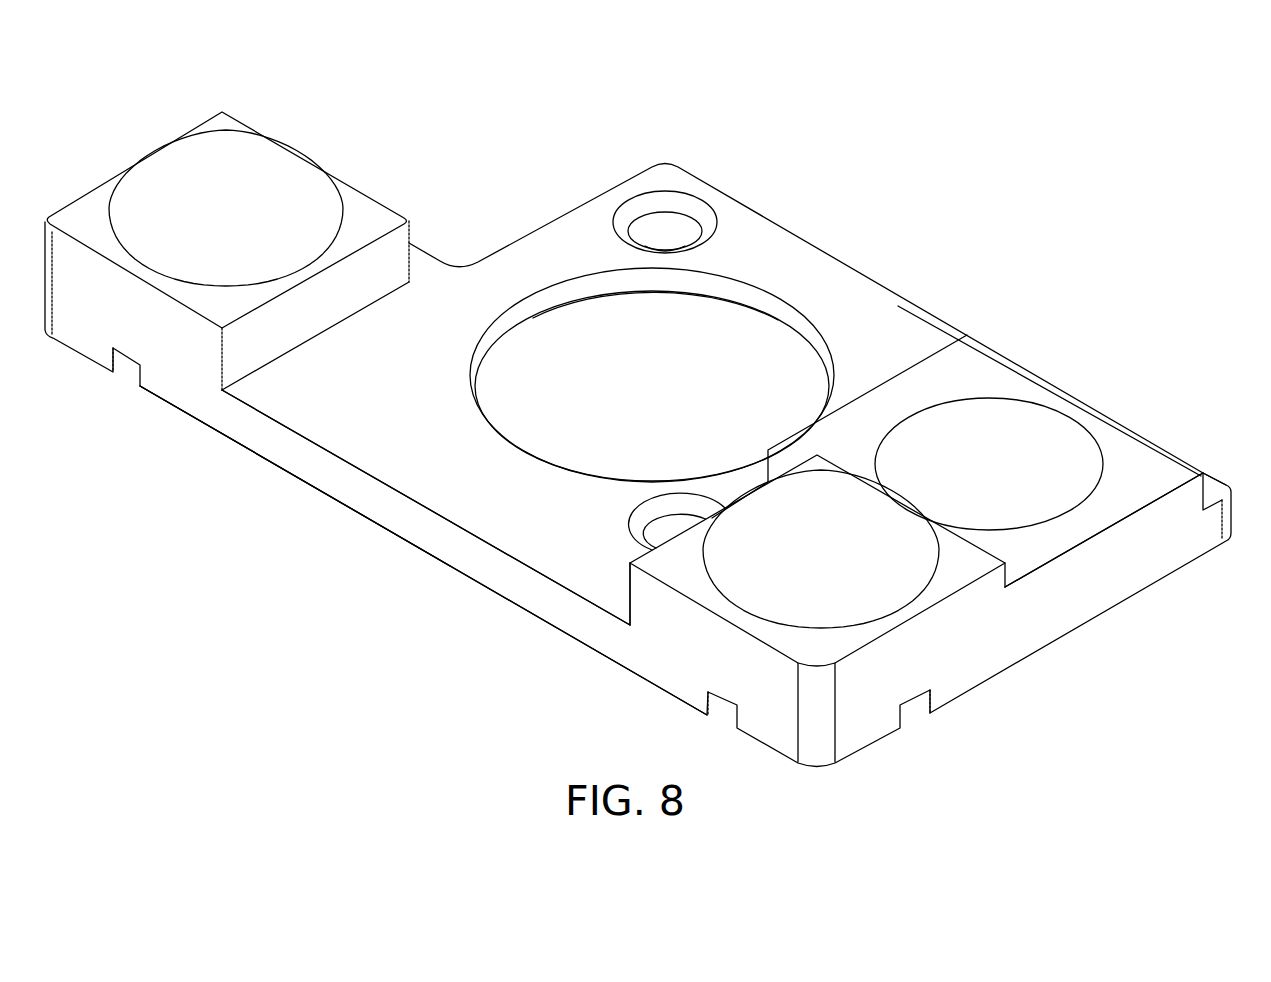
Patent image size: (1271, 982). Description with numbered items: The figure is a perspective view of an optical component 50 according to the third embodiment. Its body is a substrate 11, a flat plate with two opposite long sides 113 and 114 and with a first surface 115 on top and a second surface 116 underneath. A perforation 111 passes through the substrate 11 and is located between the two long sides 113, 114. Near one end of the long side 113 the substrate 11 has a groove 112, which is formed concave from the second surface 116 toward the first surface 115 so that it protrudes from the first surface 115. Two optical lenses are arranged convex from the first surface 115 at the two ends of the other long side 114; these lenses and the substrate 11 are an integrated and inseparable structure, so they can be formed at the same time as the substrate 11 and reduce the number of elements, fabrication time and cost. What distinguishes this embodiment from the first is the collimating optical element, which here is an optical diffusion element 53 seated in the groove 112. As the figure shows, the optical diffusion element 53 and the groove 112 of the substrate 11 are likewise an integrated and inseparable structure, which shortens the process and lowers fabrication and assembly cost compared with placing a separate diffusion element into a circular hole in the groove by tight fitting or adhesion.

The substrate 11 is at (735, 242).
The optical component 50 is at (641, 418).
The optical diffusion element 53 is at (1013, 452).
The perforation 111 is at (762, 308).
The groove 112 is at (1142, 447).
The long side 113 is at (903, 297).
The long side 114 is at (413, 521).
The first surface 115 is at (551, 236).
The second surface 116 is at (312, 485).